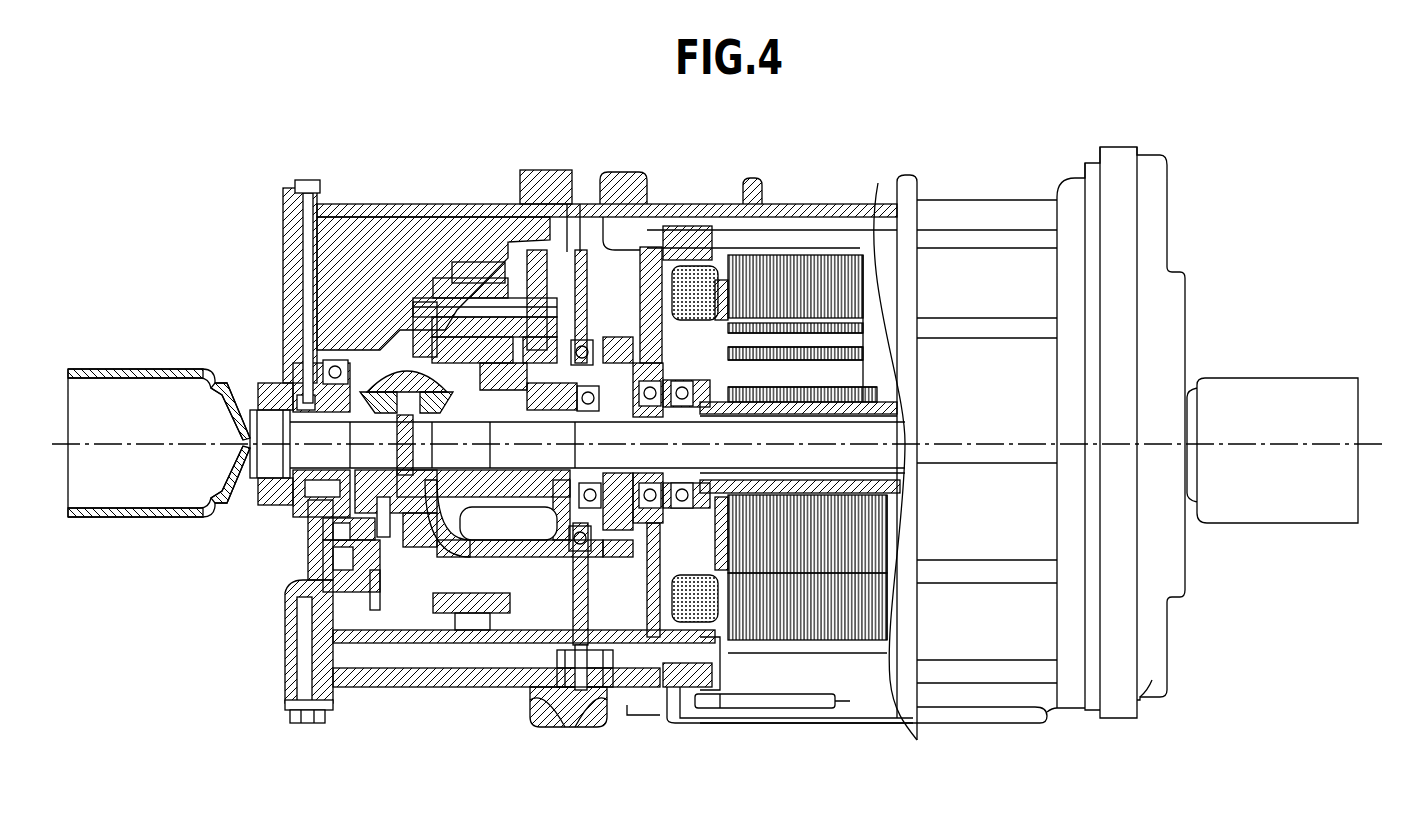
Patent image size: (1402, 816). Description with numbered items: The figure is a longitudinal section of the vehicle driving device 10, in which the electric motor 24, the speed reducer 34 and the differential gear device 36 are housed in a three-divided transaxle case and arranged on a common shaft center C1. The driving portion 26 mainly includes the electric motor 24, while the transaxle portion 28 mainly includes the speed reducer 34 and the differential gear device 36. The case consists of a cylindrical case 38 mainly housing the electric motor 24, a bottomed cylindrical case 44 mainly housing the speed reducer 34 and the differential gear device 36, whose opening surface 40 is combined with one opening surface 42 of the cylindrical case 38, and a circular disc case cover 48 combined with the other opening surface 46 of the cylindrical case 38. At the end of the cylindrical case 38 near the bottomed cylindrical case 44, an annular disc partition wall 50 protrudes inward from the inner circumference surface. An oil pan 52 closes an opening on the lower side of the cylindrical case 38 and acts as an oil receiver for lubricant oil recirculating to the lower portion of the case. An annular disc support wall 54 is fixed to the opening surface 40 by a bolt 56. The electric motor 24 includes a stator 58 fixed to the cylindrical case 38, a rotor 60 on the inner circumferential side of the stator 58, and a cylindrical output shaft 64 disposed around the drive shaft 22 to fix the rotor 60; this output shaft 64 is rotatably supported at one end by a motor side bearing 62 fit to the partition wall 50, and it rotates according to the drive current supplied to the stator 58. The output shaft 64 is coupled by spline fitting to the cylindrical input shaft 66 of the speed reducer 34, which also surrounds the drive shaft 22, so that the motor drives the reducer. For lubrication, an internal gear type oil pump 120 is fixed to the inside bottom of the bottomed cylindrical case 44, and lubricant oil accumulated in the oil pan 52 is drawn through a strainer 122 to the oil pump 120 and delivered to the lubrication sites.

The vehicle driving device 10 is at (624, 88).
The transaxle portion 28 is at (510, 122).
The driving portion 26 is at (660, 124).
The bottomed cylindrical case 44 is at (383, 207).
The cylindrical case 38 is at (805, 208).
The case cover 48 is at (1160, 205).
The partition wall 50 is at (655, 267).
The motor side bearing 62 is at (680, 382).
The input shaft 66 is at (650, 413).
The output shaft 64 is at (873, 428).
The drive shaft 22 is at (270, 459).
The rotor 60 is at (880, 530).
The stator 58 is at (875, 605).
The strainer 122 is at (780, 697).
The electric motor 24 is at (867, 657).
The other opening surface 46 is at (1140, 697).
The differential gear device 36 is at (450, 563).
The speed reducer 34 is at (538, 565).
The support wall 54 is at (583, 600).
The oil pump 120 is at (385, 612).
The opening surface 42 is at (558, 717).
The opening surface 40 is at (580, 717).
The bolt 56 is at (630, 702).
The oil pan 52 is at (697, 723).
The common shaft center C1 is at (143, 440).